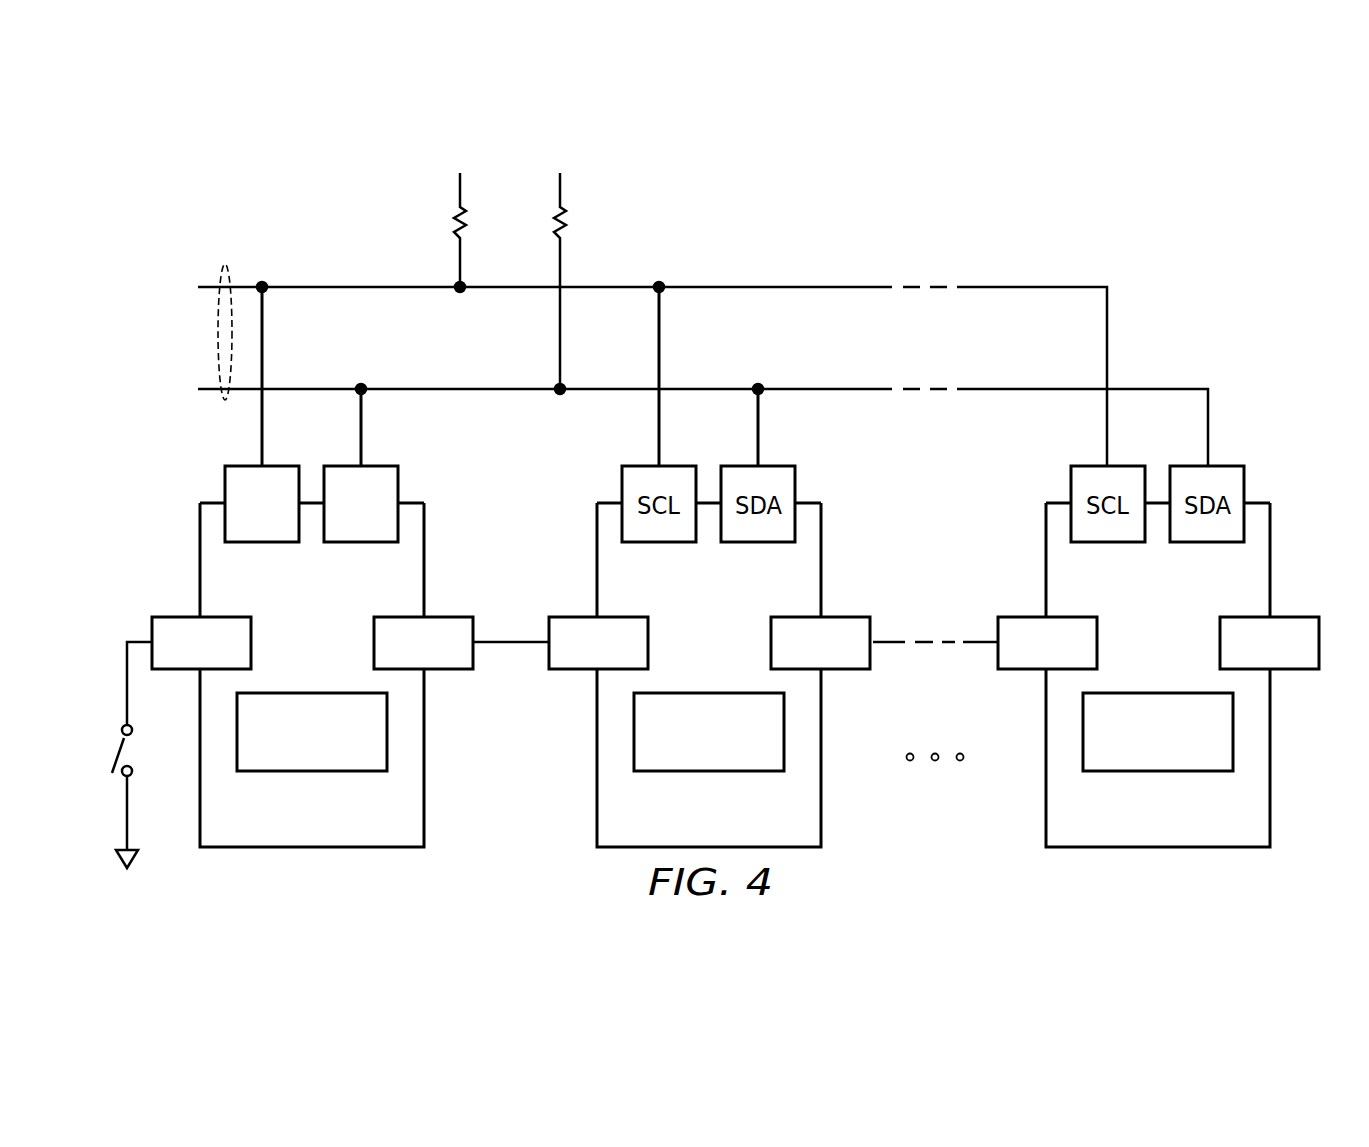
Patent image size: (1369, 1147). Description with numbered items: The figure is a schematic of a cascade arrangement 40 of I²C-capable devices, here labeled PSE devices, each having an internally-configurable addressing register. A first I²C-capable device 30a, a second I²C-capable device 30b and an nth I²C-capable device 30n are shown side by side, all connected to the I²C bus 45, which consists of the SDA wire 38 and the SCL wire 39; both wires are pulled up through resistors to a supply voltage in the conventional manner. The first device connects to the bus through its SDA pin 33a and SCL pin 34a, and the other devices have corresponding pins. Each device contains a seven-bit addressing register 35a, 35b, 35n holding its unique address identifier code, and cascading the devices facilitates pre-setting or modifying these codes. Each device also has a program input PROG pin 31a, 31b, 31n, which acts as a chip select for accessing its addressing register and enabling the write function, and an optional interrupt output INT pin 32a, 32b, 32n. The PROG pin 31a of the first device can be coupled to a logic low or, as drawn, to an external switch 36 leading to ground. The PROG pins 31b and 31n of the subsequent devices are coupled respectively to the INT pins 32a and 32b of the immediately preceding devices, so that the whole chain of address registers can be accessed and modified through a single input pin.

The first I²C-capable device 30a is at (270, 847).
The second I²C-capable device 30b is at (664, 675).
The nth I²C-capable device 30n is at (1204, 675).
The PROG pin of first device 31a is at (170, 617).
The PROG pin of second device 31b is at (589, 611).
The PROG pin of nth device 31n is at (1038, 611).
The INT pin of first device 32a is at (456, 617).
The INT pin of second device 32b is at (830, 611).
The INT pin of nth device 32n is at (1279, 611).
The SDA pin 33a is at (398, 482).
The SCL pin 34a is at (226, 482).
The addressing register of first device 35a is at (310, 771).
The addressing register of second device 35b is at (709, 763).
The addressing register of nth device 35n is at (1158, 763).
The external switch 36 is at (108, 752).
The SDA wire 38 is at (1157, 389).
The SCL wire 39 is at (1057, 287).
The cascade arrangement 40 is at (875, 197).
The I²C bus 45 is at (222, 265).